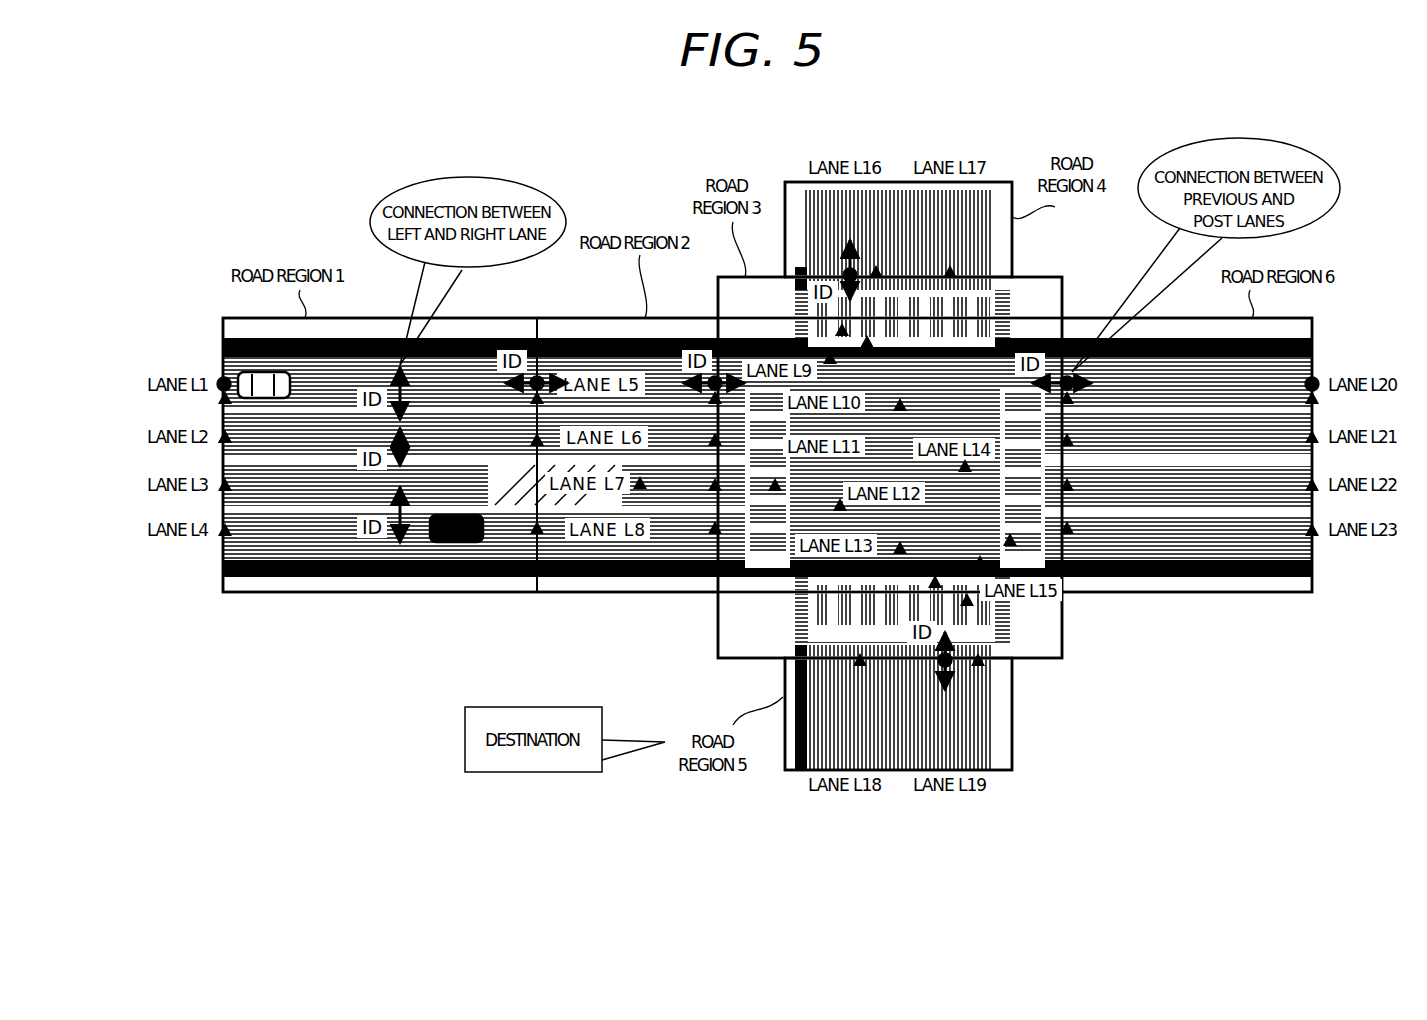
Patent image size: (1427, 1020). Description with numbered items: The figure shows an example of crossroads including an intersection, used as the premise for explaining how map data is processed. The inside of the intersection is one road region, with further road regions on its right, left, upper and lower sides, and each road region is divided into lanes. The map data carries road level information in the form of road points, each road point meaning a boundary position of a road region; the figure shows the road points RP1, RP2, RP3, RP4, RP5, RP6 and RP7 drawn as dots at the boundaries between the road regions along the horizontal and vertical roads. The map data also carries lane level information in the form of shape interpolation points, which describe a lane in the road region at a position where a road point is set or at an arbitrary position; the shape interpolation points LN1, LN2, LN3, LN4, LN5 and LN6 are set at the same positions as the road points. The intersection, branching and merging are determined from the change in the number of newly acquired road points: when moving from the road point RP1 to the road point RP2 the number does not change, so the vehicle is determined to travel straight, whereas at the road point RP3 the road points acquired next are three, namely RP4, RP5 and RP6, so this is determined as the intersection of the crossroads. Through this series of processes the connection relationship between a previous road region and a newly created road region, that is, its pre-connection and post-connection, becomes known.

The road point RP1 is at (224, 378).
The road point RP2 is at (537, 376).
The road point RP3 is at (715, 376).
The road point RP4 is at (850, 268).
The road point RP5 is at (950, 670).
The road point RP6 is at (1070, 378).
The road point 7 RP7 is at (1315, 377).
The shape interpolation point LN1 is at (222, 441).
The shape interpolation point LN2 is at (536, 442).
The shape interpolation point LN3 is at (715, 445).
The shape interpolation point LN4 is at (876, 268).
The shape interpolation point LN5 is at (985, 665).
The shape interpolation point LN6 is at (1067, 443).